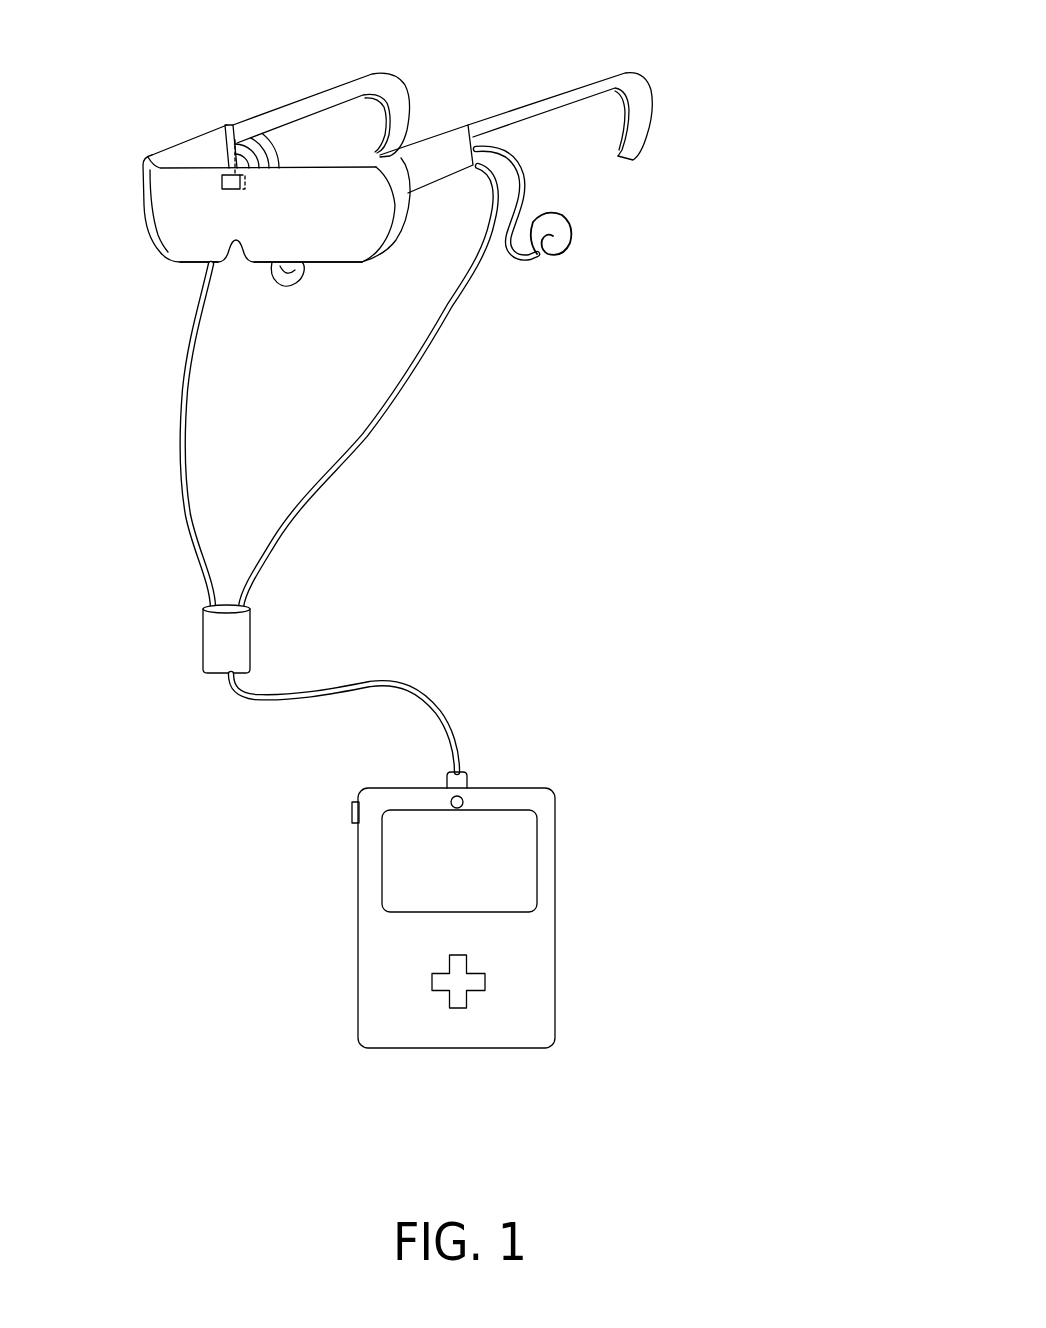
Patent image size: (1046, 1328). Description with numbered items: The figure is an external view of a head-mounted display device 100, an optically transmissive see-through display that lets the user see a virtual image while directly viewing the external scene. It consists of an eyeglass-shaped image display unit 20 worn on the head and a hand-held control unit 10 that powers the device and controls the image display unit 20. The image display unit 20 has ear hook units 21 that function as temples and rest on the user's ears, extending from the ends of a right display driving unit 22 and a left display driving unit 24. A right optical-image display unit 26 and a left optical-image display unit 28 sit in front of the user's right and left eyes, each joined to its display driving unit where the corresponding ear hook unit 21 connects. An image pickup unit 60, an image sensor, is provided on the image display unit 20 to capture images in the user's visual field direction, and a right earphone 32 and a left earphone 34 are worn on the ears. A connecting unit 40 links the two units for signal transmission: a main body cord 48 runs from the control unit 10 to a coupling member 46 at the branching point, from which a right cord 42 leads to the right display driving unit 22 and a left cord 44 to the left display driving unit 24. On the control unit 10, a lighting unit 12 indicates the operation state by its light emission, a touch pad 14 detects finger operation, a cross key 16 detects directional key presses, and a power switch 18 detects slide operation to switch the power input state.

The head-mounted display device 100 is at (711, 70).
The image display unit 20 is at (468, 74).
The ear hook units 21 is at (357, 82).
The right display driving unit 22 is at (184, 141).
The left display driving unit 24 is at (433, 131).
The right optical-image display unit 26 is at (168, 230).
The left optical-image display unit 28 is at (344, 232).
The right earphone 32 is at (288, 290).
The left earphone 34 is at (572, 238).
The image pickup unit 60 is at (237, 148).
The connecting unit 40 is at (289, 578).
The right cord 42 is at (191, 396).
The left cord 44 is at (398, 386).
The coupling member 46 is at (252, 637).
The main body cord 48 is at (393, 680).
The control unit 10 is at (575, 780).
The lighting unit 12 is at (464, 802).
The touch pad 14 is at (538, 863).
The cross key 16 is at (487, 983).
The power switch 18 is at (352, 813).